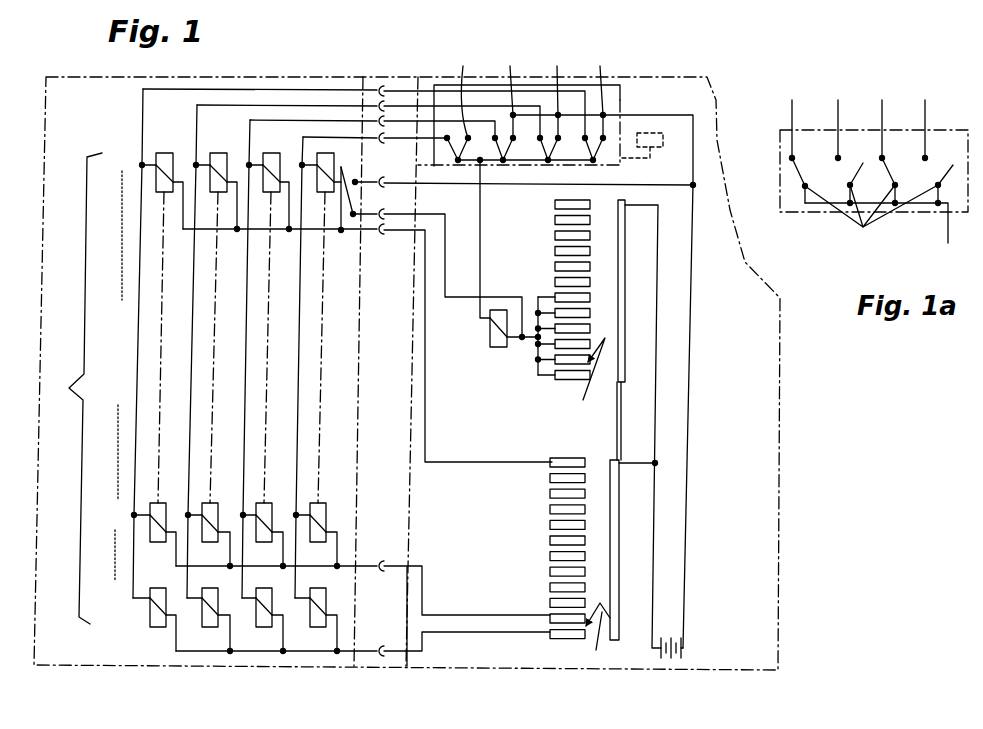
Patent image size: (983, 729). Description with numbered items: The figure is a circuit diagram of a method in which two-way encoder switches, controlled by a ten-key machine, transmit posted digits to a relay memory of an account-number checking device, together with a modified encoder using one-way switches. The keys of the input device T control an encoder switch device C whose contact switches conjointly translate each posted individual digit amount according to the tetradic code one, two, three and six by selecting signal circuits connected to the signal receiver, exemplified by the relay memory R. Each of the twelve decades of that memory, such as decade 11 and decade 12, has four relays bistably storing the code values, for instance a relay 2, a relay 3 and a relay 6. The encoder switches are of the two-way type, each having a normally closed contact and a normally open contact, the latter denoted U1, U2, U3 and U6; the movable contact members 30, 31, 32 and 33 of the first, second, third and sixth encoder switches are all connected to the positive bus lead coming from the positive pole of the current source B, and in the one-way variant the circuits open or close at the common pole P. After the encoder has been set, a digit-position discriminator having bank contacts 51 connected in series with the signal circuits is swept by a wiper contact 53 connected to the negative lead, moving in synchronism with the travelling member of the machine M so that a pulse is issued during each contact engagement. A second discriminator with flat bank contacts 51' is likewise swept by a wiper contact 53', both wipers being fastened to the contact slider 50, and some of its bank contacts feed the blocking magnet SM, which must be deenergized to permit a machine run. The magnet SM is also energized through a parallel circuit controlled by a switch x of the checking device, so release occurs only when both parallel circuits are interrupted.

In FIG. 1, the memory relay for code value 2 is at (266, 393).
In FIG. 1, the memory relay for code value 3 is at (213, 393).
In FIG. 1, the memory relay for code value 6 is at (158, 392).
In FIG. 1, the memory decade 11 is at (116, 503).
In FIG. 1, the memory decade 12 is at (116, 586).
In FIG. 1, the movable contact member of encoder switch I 30 is at (457, 162).
In FIG. 1A, the movable contact member of encoder switch I 30 is at (812, 176).
In FIG. 1, the movable contact member of encoder switch II 31 is at (502, 162).
In FIG. 1A, the movable contact member of encoder switch II 31 is at (863, 178).
In FIG. 1, the movable contact member of encoder switch III 32 is at (547, 162).
In FIG. 1A, the movable contact member of encoder switch III 32 is at (902, 178).
In FIG. 1, the movable contact member of encoder switch VI 33 is at (598, 150).
In FIG. 1A, the movable contact member of encoder switch VI 33 is at (945, 178).
In FIG. 1, the contact slider 50 is at (622, 345).
In FIG. 1, the bank contacts of discriminator W 51 is at (541, 553).
In FIG. 1, the bank contacts of discriminator W' 51' is at (547, 301).
In FIG. 1, the wiper contact of discriminator W 53 is at (598, 639).
In FIG. 1, the wiper contact of discriminator W' 53' is at (588, 381).
In FIG. 1, the normally open contact of encoder switch I U1 is at (470, 92).
In FIG. 1, the normally open contact of encoder switch II U2 is at (510, 92).
In FIG. 1, the normally open contact of encoder switch III U3 is at (560, 92).
In FIG. 1, the normally open contact of encoder switch VI U6 is at (606, 92).
In FIG. 1, the encoder switch device C is at (620, 100).
In FIG. 1A, the encoder switch device C is at (780, 175).
In FIG. 1, the input device (keyboard) T is at (663, 141).
In FIG. 1, the common pole of encoder switches P is at (526, 153).
In FIG. 1A, the common pole of encoder switches P is at (871, 219).
In FIG. 1, the blocking (stop) magnet SM is at (490, 340).
In FIG. 1, the relay memory R is at (75, 388).
In FIG. 1, the machine M is at (450, 669).
In FIG. 1, the current source B is at (672, 658).
In FIG. 1, the switch of the number checking device x is at (349, 184).